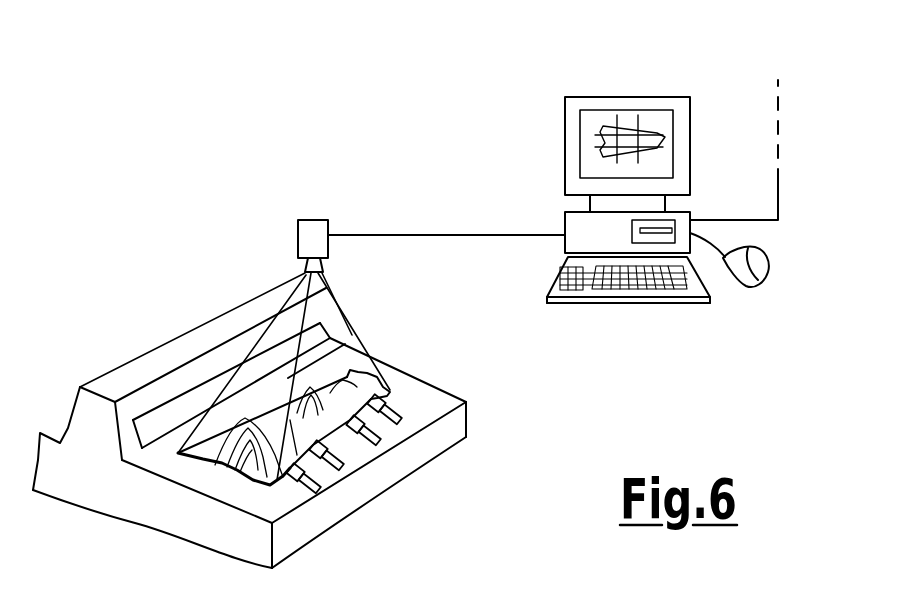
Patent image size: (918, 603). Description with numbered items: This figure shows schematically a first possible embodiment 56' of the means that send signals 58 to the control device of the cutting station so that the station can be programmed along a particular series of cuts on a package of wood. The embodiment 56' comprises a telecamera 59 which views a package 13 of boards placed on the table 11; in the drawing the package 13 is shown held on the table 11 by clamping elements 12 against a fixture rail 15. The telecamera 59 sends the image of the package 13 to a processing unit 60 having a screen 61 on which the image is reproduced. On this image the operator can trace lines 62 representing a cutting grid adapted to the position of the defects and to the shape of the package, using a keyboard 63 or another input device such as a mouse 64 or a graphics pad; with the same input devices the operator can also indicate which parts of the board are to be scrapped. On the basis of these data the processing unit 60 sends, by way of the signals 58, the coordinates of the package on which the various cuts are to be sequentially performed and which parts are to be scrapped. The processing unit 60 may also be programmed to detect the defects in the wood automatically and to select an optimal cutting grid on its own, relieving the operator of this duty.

The first cut programming means 56' is at (235, 266).
The table 11 is at (423, 393).
The clamping elements 12 is at (400, 421).
The package 13 is at (235, 468).
The holding fixture rail 15 is at (163, 340).
The signals 58 is at (785, 187).
The telecamera 59 is at (299, 238).
The processing unit 60 is at (595, 92).
The screen 61 is at (682, 125).
The lines 62 is at (627, 123).
The keyboard 63 is at (640, 297).
The mouse 64 is at (760, 265).